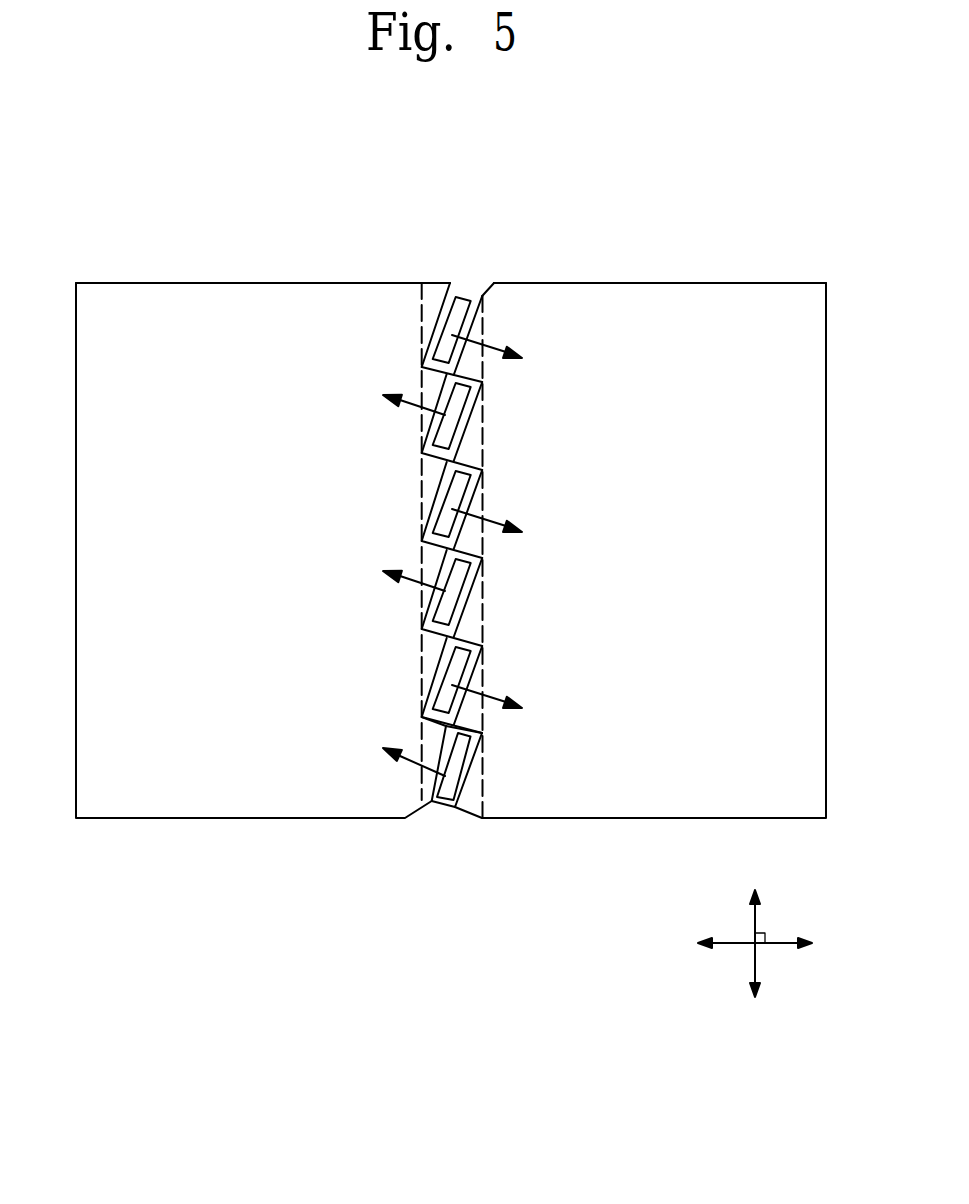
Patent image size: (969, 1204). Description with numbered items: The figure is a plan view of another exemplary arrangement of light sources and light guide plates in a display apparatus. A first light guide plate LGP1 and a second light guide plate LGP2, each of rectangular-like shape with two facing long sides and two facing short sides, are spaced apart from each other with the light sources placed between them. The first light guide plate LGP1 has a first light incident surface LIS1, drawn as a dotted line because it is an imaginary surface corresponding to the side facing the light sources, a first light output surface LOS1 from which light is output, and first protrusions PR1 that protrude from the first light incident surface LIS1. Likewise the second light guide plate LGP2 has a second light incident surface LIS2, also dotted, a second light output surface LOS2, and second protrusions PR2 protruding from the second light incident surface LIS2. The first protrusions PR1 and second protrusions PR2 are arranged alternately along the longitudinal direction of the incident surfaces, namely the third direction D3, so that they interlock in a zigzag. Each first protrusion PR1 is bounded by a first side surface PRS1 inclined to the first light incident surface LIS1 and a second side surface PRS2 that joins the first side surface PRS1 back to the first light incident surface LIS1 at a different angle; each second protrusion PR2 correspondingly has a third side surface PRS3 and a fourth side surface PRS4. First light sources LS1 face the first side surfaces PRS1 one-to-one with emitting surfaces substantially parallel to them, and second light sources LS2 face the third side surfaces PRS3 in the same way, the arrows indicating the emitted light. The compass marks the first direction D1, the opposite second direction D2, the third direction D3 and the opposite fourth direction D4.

The first light guide plate LGP1 is at (133, 279).
The second light guide plate LGP2 is at (782, 279).
The first light output surface LOS1 is at (243, 297).
The second light output surface LOS2 is at (672, 297).
The first light incident surface LIS1 is at (420, 421).
The second light incident surface LIS2 is at (483, 413).
The first side surface PRS1 is at (435, 502).
The second side surface PRS2 is at (433, 470).
The third side surface PRS3 is at (483, 592).
The fourth side surface PRS4 is at (472, 641).
The first light source LS1 is at (447, 775).
The second light source LS2 is at (440, 688).
The first protrusion PR1 is at (430, 735).
The second protrusion PR2 is at (483, 722).
The first direction D1 is at (711, 945).
The second direction D2 is at (797, 945).
The third direction D3 is at (755, 902).
The fourth direction D4 is at (755, 986).